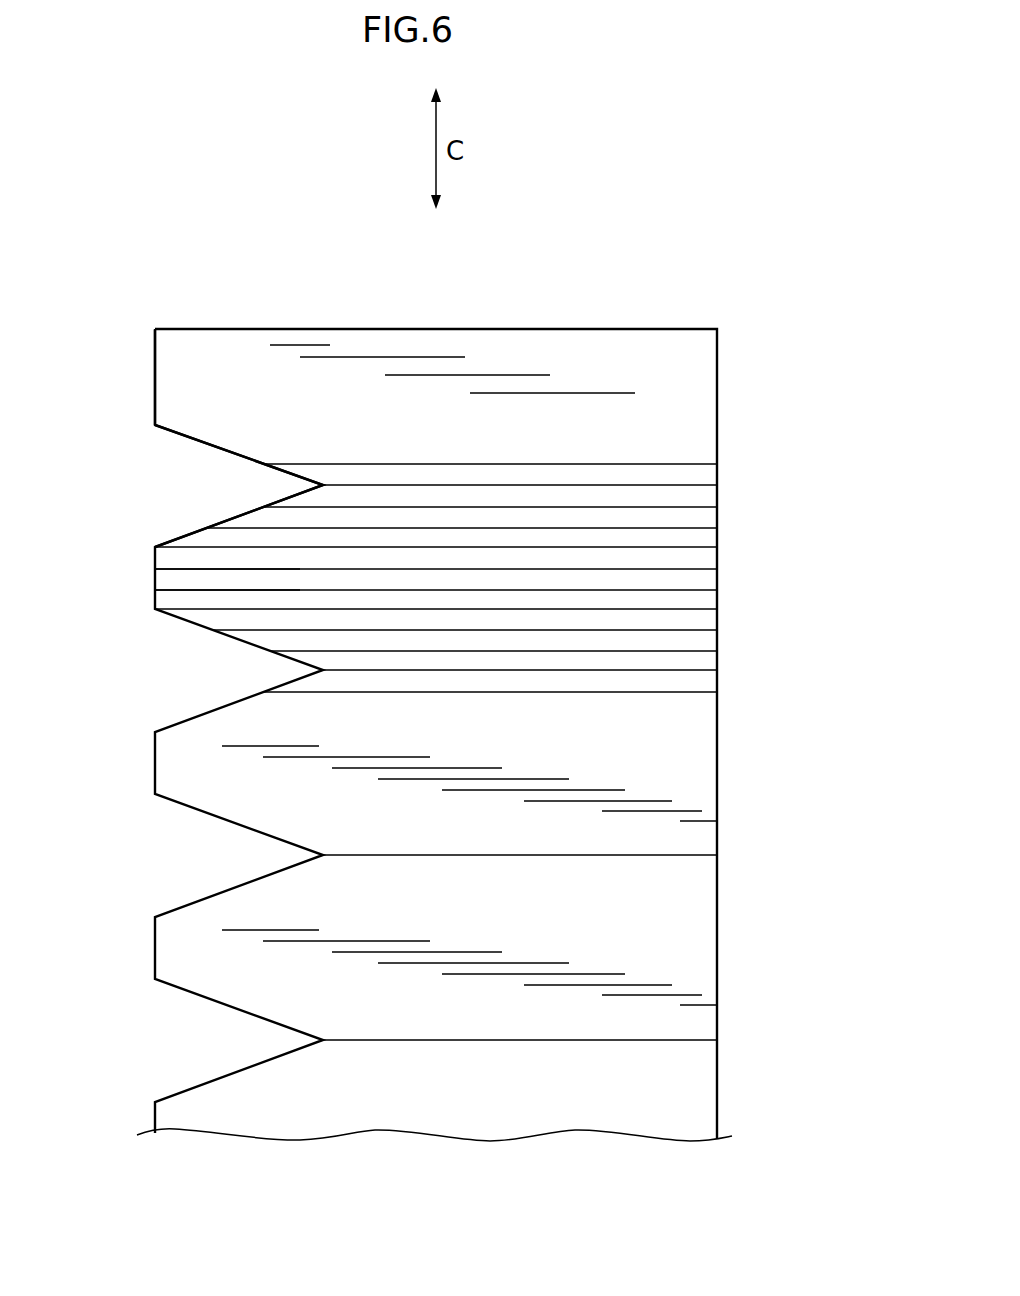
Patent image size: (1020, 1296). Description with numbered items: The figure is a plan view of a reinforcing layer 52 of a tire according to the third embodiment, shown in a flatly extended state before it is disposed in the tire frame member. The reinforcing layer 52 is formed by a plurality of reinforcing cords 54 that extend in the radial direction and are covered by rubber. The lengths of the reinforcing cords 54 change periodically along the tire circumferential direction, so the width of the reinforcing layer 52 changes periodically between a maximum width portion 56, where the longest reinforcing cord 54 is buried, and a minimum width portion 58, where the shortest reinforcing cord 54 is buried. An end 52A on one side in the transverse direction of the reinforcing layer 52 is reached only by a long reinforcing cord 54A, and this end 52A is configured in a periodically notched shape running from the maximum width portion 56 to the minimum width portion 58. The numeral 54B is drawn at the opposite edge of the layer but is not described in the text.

The reinforcing layer 52 is at (697, 199).
The end 52A is at (155, 361).
The reinforcing cord 54 is at (283, 464).
The long reinforcing cord 54A is at (172, 569).
The groove bottom 54B is at (680, 672).
The maximum width portion 56 is at (720, 578).
The minimum width portion 58 is at (720, 486).